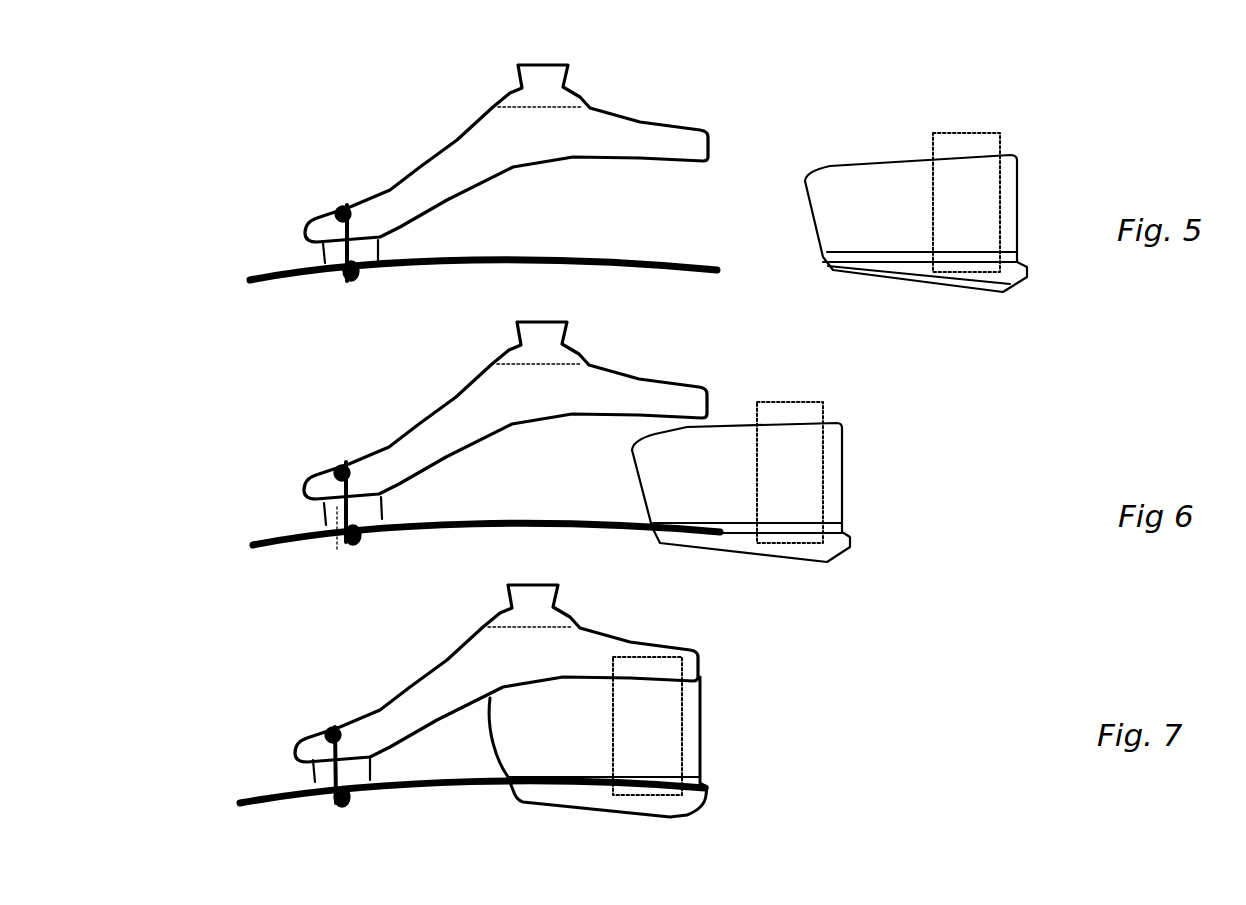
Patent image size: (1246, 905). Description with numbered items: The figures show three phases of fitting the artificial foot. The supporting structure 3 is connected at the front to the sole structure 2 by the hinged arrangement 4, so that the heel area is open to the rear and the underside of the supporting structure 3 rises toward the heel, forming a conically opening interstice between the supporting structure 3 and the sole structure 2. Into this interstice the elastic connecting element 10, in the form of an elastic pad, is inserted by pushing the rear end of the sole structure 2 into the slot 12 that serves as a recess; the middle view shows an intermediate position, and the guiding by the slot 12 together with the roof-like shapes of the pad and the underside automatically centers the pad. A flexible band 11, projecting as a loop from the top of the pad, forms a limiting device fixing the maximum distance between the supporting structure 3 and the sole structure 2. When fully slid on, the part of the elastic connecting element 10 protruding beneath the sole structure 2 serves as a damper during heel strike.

In FIG. 5, the sole structure 2 is at (461, 266).
In FIG. 5, the supporting structure 3 is at (427, 160).
In FIG. 5, the hinged arrangement 4 is at (396, 250).
In FIG. 5, the elastic connecting element 10 is at (885, 207).
In FIG. 6, the elastic connecting element 10 is at (717, 487).
In FIG. 5, the flexible band 11 is at (966, 202).
In FIG. 6, the flexible band 11 is at (827, 442).
In FIG. 5, the slot 12 is at (855, 267).